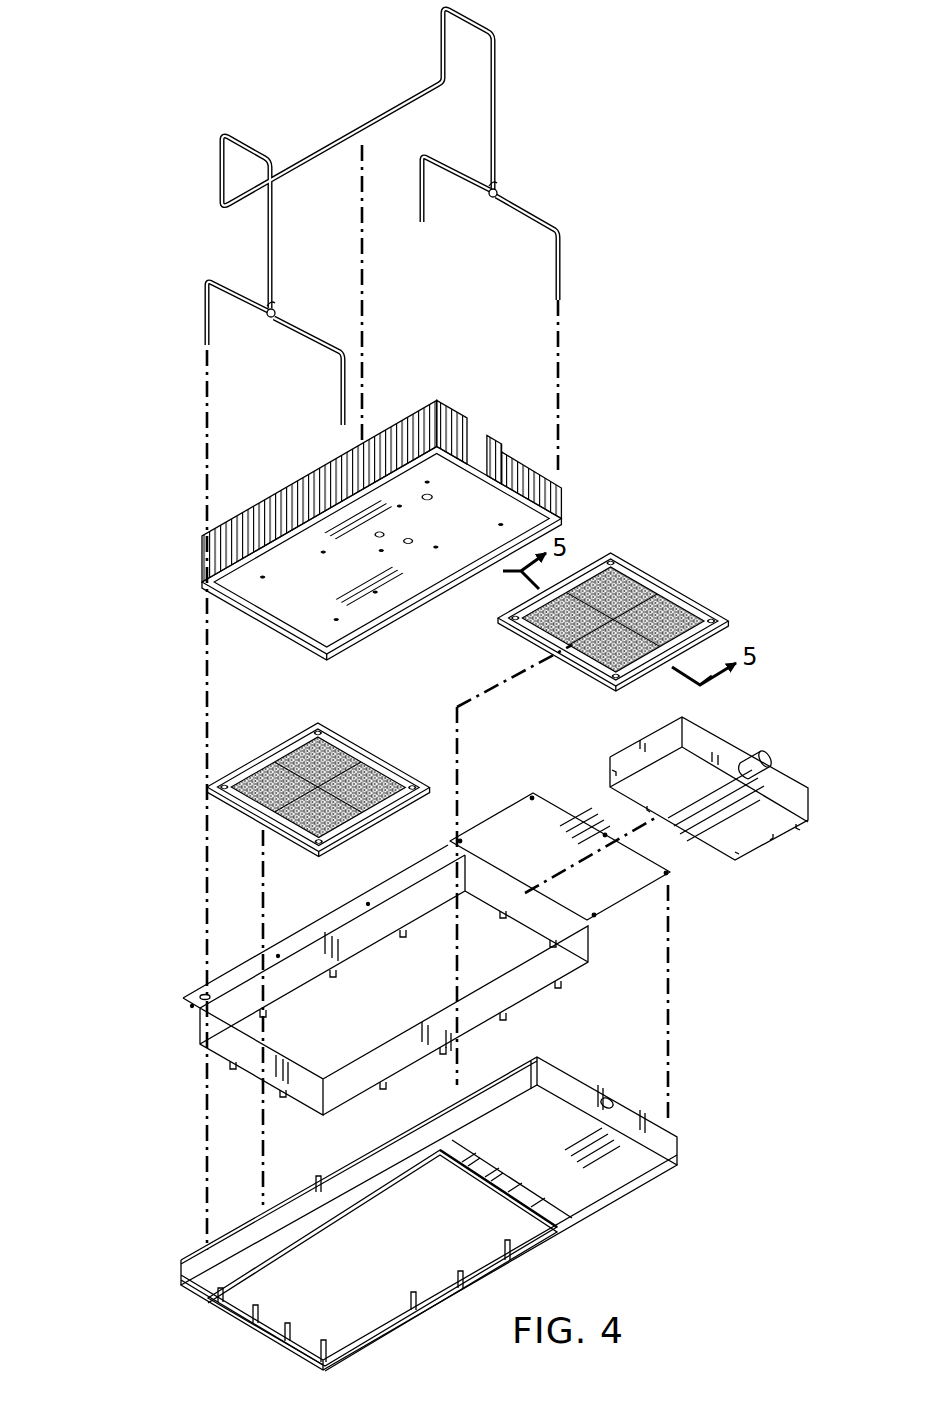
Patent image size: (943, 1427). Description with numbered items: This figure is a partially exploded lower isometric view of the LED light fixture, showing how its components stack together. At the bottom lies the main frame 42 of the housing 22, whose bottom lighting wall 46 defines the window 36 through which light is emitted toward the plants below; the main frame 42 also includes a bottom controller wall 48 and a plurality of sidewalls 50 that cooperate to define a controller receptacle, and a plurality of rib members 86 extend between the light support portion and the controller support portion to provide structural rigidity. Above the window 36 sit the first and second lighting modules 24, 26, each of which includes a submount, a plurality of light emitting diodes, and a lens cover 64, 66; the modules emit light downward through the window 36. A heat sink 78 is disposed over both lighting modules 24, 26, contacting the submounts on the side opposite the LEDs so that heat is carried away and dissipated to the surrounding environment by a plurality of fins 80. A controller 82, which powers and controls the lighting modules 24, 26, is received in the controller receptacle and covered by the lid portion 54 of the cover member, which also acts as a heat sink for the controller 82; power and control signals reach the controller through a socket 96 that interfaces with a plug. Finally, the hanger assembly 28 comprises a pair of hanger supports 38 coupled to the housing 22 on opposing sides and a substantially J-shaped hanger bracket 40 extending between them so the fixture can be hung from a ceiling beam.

The housing 22 is at (426, 922).
The first lighting module 24 is at (613, 633).
The second lighting module 26 is at (321, 780).
The hanger assembly 28 is at (357, 217).
The window 36 is at (314, 1326).
The hanger supports 38 is at (520, 212).
The hanger bracket 40 is at (333, 141).
The main frame 42 is at (562, 986).
The bottom lighting wall 46 is at (243, 1326).
The bottom controller wall 48 is at (434, 1217).
The sidewalls 50 is at (648, 1110).
The lid portion 54 is at (546, 796).
The lens cover 64 is at (604, 674).
The lens cover 66 is at (248, 808).
The heat sink 78 is at (381, 513).
The fins 80 is at (420, 412).
The controller 82 is at (713, 803).
The rib members 86 is at (458, 1165).
The socket 96 is at (766, 750).